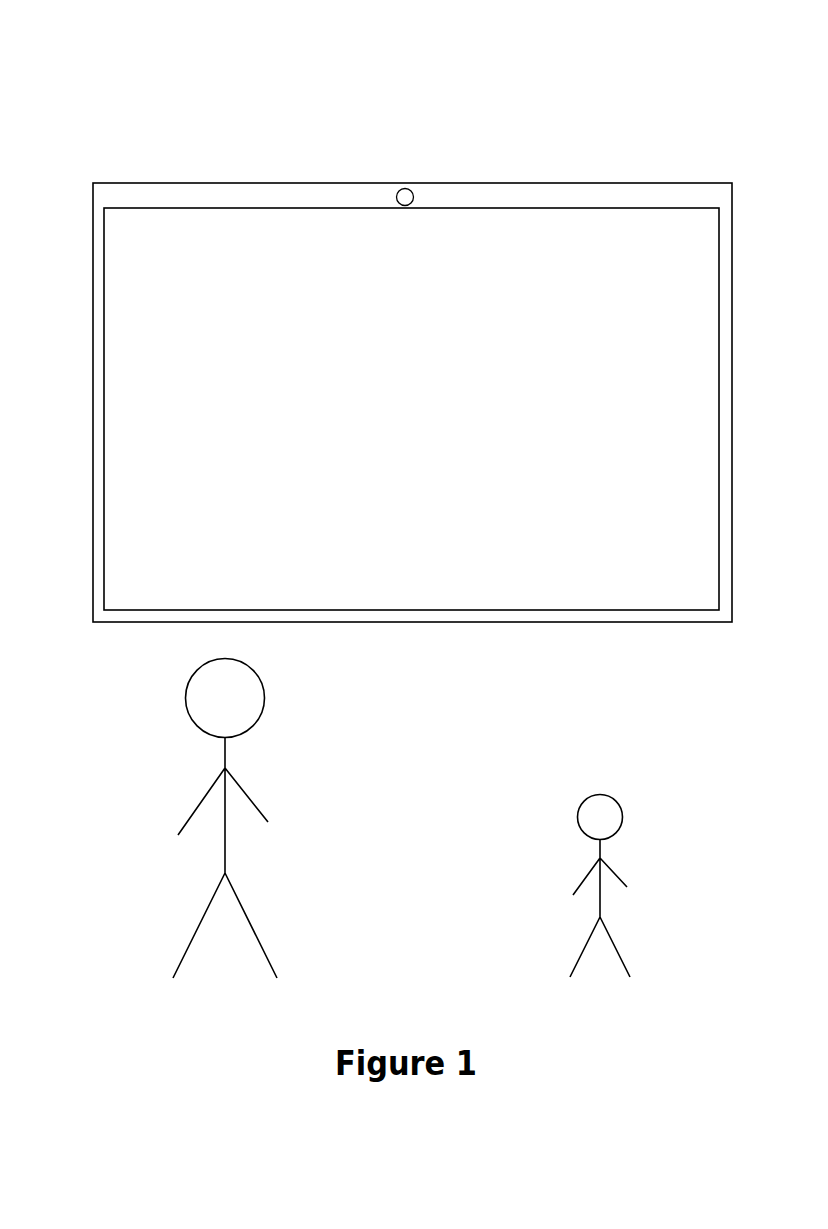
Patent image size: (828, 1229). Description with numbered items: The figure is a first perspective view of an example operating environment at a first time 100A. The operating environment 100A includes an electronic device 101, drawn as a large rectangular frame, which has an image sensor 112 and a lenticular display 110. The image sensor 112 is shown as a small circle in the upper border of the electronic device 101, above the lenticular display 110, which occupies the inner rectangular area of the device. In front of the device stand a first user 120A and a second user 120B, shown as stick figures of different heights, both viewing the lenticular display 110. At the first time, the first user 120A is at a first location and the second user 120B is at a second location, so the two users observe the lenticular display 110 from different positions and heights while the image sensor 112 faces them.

The example operating environment at a first time 100A is at (170, 76).
The electronic device 101 is at (93, 337).
The lenticular display 110 is at (104, 262).
The image sensor 112 is at (412, 191).
The first user 120A is at (208, 795).
The second user 120B is at (590, 872).